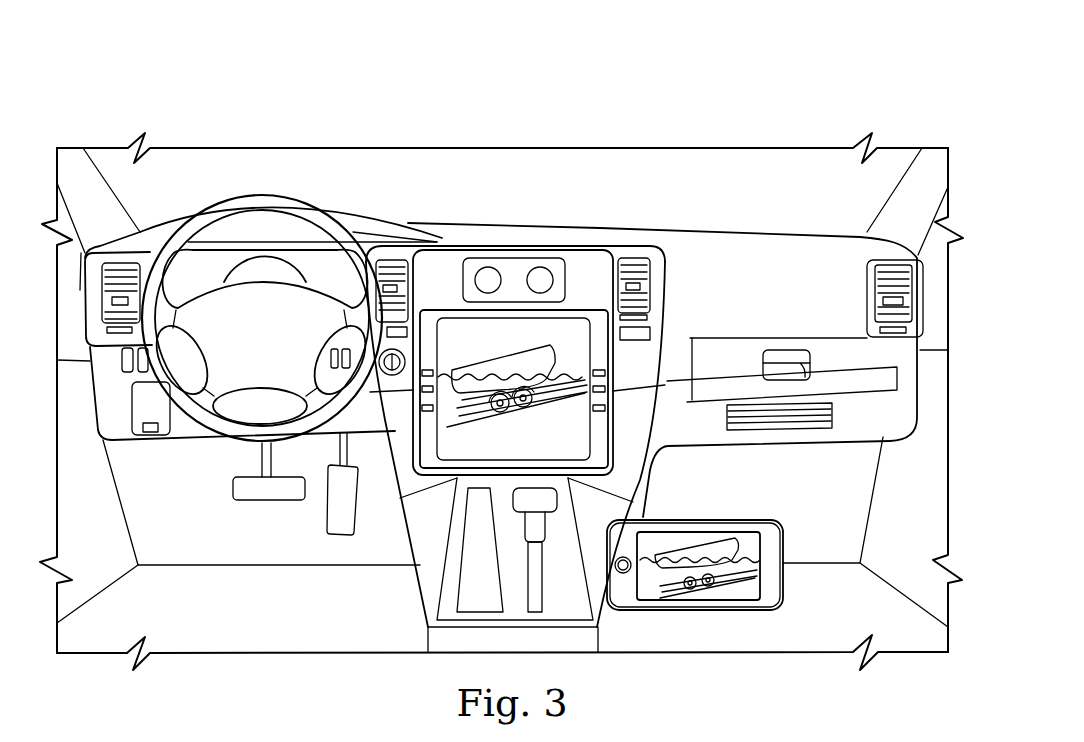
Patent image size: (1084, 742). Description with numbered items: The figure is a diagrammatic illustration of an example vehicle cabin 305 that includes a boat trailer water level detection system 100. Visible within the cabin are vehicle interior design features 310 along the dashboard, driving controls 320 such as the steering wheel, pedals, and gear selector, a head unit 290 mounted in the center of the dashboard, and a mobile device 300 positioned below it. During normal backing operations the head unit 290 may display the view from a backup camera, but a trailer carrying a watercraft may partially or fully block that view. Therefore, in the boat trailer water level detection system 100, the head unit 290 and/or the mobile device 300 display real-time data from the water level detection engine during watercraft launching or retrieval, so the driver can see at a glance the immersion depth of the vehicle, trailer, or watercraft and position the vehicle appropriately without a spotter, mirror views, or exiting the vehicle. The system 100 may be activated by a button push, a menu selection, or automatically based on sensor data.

The boat trailer water level detection system 100 is at (396, 87).
The vehicle cabin 305 is at (674, 125).
The vehicle interior design features 310 is at (742, 348).
The head unit 290 is at (586, 435).
The mobile device 300 is at (784, 585).
The driving controls 320 is at (264, 196).